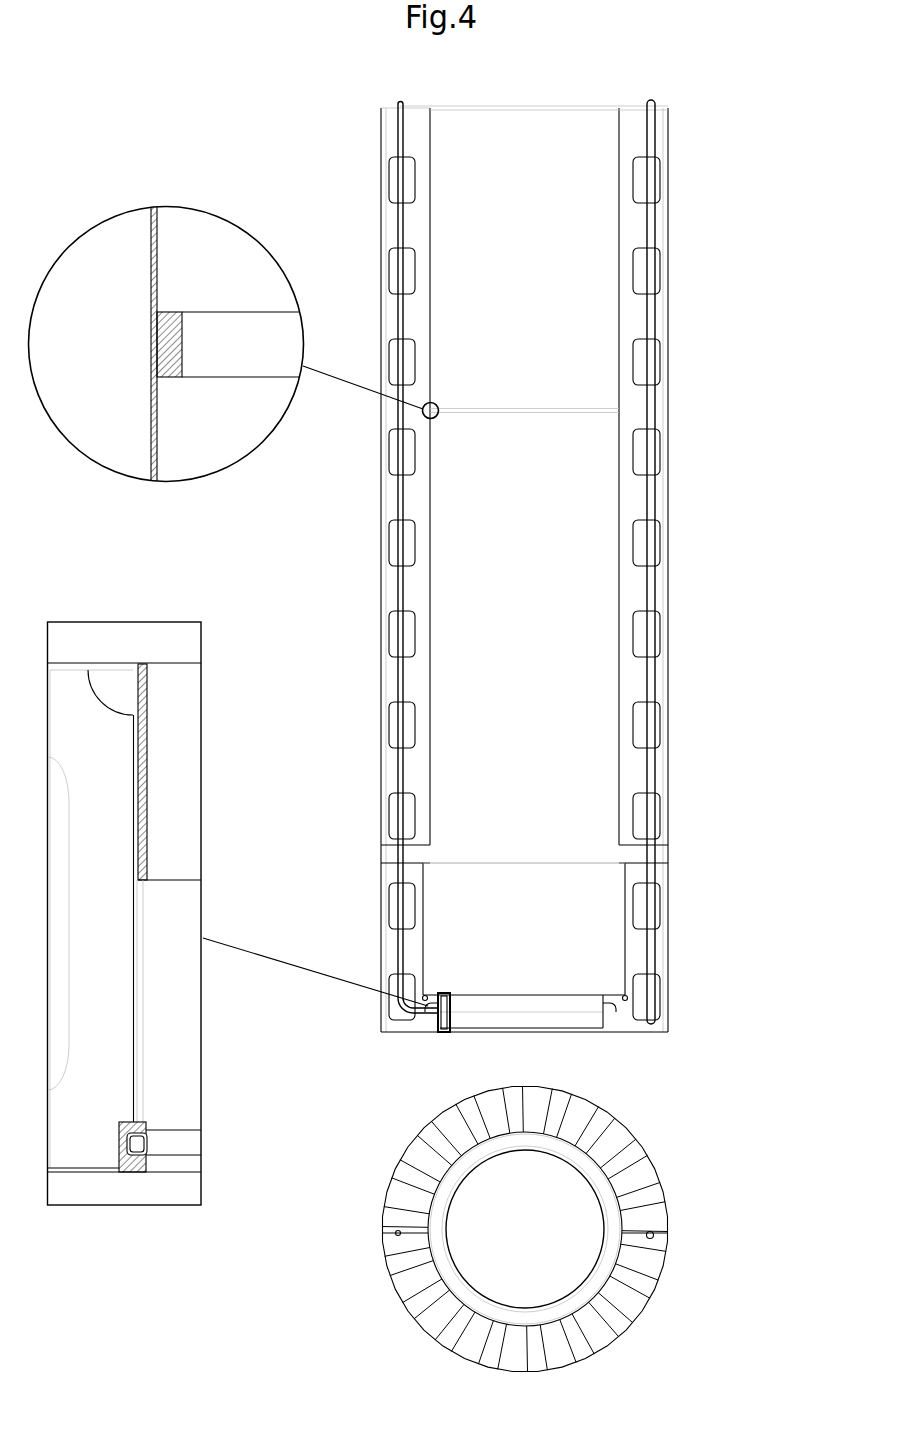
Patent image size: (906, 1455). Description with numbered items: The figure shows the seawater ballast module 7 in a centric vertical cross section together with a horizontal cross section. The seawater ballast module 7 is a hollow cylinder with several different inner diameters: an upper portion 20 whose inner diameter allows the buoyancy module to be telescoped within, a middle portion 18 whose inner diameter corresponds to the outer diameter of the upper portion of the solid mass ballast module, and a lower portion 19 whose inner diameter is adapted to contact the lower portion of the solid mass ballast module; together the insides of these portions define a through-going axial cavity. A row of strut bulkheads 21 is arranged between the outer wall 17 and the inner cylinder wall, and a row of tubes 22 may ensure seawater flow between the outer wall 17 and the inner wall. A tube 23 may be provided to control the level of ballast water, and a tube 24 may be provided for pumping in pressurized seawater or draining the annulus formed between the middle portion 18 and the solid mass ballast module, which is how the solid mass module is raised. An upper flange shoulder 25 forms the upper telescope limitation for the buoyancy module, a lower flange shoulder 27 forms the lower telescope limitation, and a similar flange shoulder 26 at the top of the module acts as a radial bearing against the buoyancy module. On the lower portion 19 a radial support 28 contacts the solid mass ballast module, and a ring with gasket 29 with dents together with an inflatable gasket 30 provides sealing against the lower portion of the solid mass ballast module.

The seawater ballast module 7 is at (669, 325).
The outer wall 17 is at (669, 736).
The middle portion 18 is at (625, 907).
The lower portion 19 is at (625, 1000).
The upper portion 20 is at (621, 691).
The strut bulkheads 21 is at (660, 772).
The tubes 22 is at (662, 856).
The tube 23 is at (655, 137).
The tube 24 is at (400, 176).
The upper flange shoulder 25 is at (177, 304).
The flange shoulder 26 is at (430, 107).
The lower flange shoulder 27 is at (430, 862).
The radial support 28 is at (147, 757).
The ring with gasket 29 is at (142, 1130).
The inflatable gasket 30 is at (147, 1145).